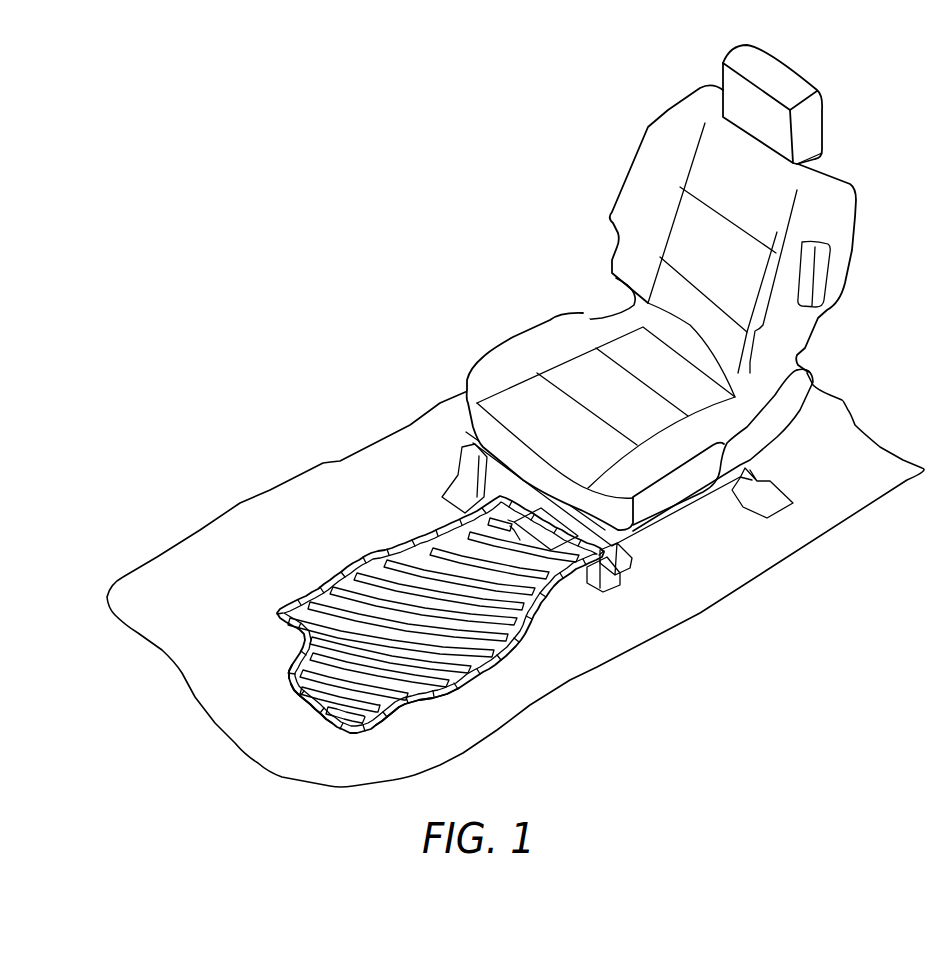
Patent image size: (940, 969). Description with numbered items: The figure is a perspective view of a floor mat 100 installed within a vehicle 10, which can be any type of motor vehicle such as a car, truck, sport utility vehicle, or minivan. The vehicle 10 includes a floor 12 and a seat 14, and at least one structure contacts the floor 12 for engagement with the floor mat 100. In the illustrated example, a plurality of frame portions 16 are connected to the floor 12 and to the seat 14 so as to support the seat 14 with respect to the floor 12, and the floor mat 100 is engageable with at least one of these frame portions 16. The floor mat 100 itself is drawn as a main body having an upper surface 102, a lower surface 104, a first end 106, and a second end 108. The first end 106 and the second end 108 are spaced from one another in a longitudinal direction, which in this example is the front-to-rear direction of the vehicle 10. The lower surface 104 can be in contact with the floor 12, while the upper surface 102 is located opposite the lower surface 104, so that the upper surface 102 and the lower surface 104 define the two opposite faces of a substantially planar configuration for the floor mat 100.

The vehicle 10 is at (514, 416).
The floor 12 is at (270, 490).
The seat 14 is at (645, 131).
The frame portions 16 is at (458, 482).
The floor mat 100 is at (396, 626).
The upper surface 102 is at (347, 583).
The lower surface 104 is at (393, 717).
The first end 106 is at (307, 707).
The second end 108 is at (655, 552).